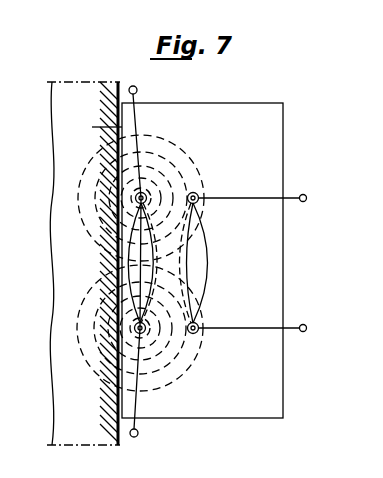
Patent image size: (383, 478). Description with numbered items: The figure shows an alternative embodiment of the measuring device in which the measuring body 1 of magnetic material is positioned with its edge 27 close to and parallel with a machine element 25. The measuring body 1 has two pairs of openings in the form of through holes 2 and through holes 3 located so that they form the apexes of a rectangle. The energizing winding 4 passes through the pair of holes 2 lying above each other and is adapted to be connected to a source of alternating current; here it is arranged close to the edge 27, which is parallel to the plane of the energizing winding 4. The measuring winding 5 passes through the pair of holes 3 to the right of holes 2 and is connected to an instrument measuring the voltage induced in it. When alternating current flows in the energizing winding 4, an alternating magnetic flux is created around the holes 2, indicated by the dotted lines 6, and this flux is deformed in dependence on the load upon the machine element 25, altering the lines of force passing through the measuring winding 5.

The measuring body 1 is at (285, 130).
The through holes 2 is at (152, 188).
The through holes 3 is at (198, 195).
The energizing winding 4 is at (122, 258).
The measuring winding 5 is at (213, 258).
The dotted lines of force 6 is at (156, 147).
The machine element 25 is at (86, 111).
The edge 27 is at (96, 128).